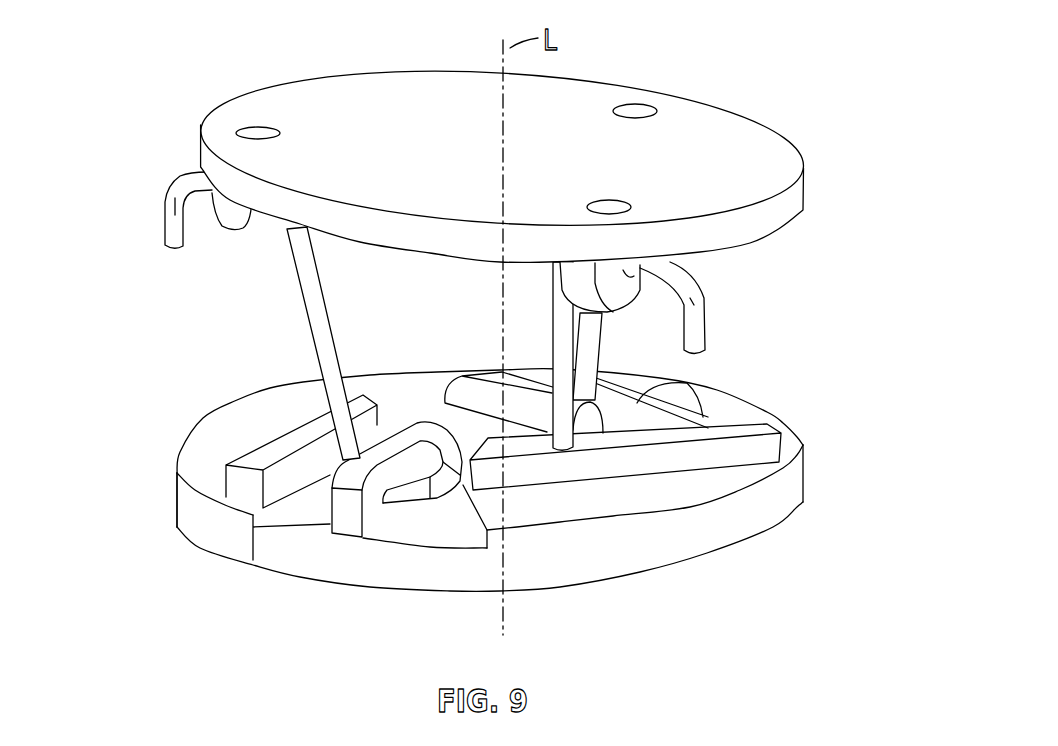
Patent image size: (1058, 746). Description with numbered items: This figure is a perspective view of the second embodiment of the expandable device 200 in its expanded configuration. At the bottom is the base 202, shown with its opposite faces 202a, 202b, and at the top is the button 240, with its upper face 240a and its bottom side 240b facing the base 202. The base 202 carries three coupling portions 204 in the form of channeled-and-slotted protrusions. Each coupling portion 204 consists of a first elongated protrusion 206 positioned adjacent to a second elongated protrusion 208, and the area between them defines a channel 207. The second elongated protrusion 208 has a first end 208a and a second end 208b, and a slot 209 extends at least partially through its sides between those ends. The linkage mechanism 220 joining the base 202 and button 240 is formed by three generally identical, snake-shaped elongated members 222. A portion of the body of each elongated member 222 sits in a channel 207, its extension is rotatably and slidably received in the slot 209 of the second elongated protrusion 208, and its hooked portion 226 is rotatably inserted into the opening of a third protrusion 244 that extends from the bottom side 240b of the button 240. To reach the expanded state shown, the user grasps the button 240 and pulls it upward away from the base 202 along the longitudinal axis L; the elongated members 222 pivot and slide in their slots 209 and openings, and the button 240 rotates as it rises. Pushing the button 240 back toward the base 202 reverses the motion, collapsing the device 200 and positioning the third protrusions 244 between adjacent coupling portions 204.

The expandable device 200 is at (501, 346).
The base 202 is at (501, 500).
The top surface of base plate 202a is at (805, 443).
The bottom surface of base plate 202b is at (733, 557).
The coupling portion 204 is at (795, 424).
The first elongated protrusion 206 is at (297, 428).
The channel 207 is at (280, 490).
The second elongated protrusion 208 is at (487, 470).
The first end 208a is at (352, 530).
The second end 208b is at (405, 425).
The slot 209 is at (388, 512).
The linkage mechanism 220 is at (501, 473).
The elongated member 222 is at (298, 268).
The hooked portion 226 is at (167, 205).
The button 240 is at (550, 169).
The top surface of top plate 240a is at (706, 140).
The bottom side 240b is at (783, 235).
The third protrusion 244 is at (240, 220).